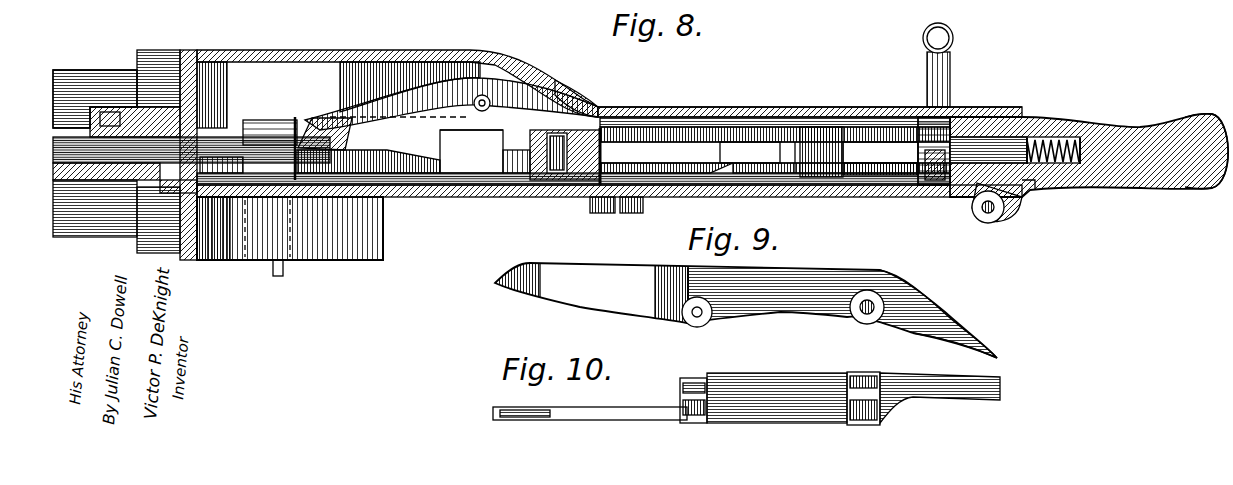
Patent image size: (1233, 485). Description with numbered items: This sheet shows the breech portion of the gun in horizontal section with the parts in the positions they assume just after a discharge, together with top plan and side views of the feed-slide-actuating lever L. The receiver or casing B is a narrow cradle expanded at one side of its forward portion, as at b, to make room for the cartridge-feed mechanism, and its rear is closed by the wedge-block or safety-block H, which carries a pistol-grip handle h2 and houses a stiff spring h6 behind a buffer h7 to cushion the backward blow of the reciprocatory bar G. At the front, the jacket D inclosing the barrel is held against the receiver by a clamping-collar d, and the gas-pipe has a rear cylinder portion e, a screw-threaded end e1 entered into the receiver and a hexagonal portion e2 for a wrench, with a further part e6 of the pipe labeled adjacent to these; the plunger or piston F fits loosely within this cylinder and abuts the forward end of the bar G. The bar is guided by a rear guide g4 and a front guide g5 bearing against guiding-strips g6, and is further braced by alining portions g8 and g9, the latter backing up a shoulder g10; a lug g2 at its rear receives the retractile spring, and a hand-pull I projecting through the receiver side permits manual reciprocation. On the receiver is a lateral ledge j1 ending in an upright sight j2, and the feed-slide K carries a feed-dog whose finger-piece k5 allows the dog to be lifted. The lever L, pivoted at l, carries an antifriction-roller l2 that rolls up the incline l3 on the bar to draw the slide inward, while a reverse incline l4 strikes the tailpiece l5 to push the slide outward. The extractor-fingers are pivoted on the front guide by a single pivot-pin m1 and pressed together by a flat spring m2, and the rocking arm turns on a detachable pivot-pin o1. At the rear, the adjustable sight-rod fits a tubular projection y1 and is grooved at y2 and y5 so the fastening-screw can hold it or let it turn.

In FIG. 8, the plunger or piston F is at (72, 138).
In FIG. 8, the jacket D is at (80, 68).
In FIG. 8, the clamping-collar d is at (150, 50).
In FIG. 8, the cylinder portion of gas-pipe e is at (74, 165).
In FIG. 8, the screw-threaded portion e1 is at (187, 245).
In FIG. 8, the hexagonal portion e2 is at (128, 106).
In FIG. 8, the pin e6 is at (110, 124).
In FIG. 8, the ledge or lateral extension j1 is at (338, 50).
In FIG. 8, the upright portion forming a sight j2 is at (190, 50).
In FIG. 8, the finger-piece k5 is at (283, 263).
In FIG. 8, the feed-slide K is at (283, 130).
In FIG. 8, the feed-slide-actuating lever L is at (330, 117).
In FIG. 9, the feed-slide-actuating lever L is at (751, 315).
In FIG. 10, the feed-slide-actuating lever L is at (686, 398).
In FIG. 8, the lever pivot l is at (486, 100).
In FIG. 8, the antifriction-roller l2 is at (325, 134).
In FIG. 9, the antifriction-roller l2 is at (688, 322).
In FIG. 10, the antifriction-roller l2 is at (680, 388).
In FIG. 8, the incline or cam-surface l3 is at (436, 140).
In FIG. 8, the second incline l4 is at (733, 163).
In FIG. 8, the tailpiece l5 is at (550, 95).
In FIG. 9, the tailpiece l5 is at (947, 317).
In FIG. 10, the tailpiece l5 is at (1000, 388).
In FIG. 8, the expanded portion of receiver b is at (460, 50).
In FIG. 8, the receiver or casing B is at (810, 96).
In FIG. 8, the pivot-pin m1 is at (530, 152).
In FIG. 8, the flat spring m2 is at (560, 163).
In FIG. 8, the lug g2 is at (940, 180).
In FIG. 8, the rear guide or cross-head g4 is at (913, 177).
In FIG. 8, the front guide or cross-head g5 is at (587, 170).
In FIG. 8, the guiding-strips g6 is at (838, 120).
In FIG. 8, the alining portion g8 is at (471, 147).
In FIG. 8, the rear alining portion g9 is at (795, 167).
In FIG. 8, the shoulder g10 is at (875, 173).
In FIG. 8, the reciprocatory bar or actuator G is at (775, 145).
In FIG. 8, the pivot-pin o1 is at (623, 212).
In FIG. 8, the hand-pull or handle I is at (953, 30).
In FIG. 8, the wedge-block or safety-block H is at (1043, 118).
In FIG. 8, the handle h2 is at (1182, 126).
In FIG. 8, the stiff spring h6 is at (1063, 180).
In FIG. 8, the buffer h7 is at (1033, 180).
In FIG. 8, the tubular projection y1 is at (988, 222).
In FIG. 8, the groove y2 is at (1005, 217).
In FIG. 8, the vertical groove y5 is at (973, 213).